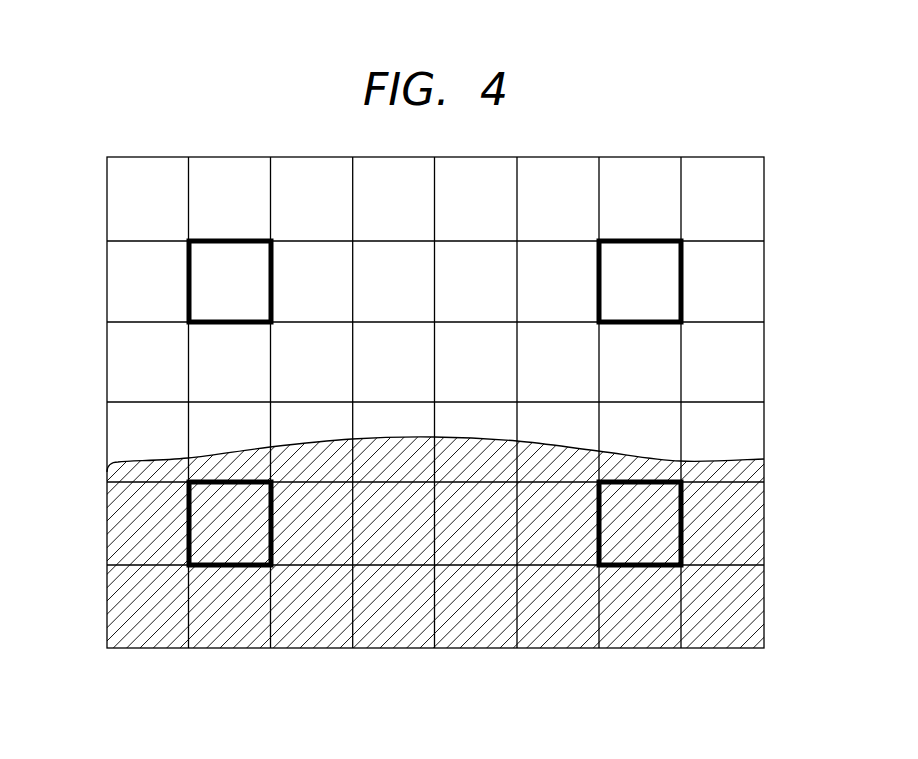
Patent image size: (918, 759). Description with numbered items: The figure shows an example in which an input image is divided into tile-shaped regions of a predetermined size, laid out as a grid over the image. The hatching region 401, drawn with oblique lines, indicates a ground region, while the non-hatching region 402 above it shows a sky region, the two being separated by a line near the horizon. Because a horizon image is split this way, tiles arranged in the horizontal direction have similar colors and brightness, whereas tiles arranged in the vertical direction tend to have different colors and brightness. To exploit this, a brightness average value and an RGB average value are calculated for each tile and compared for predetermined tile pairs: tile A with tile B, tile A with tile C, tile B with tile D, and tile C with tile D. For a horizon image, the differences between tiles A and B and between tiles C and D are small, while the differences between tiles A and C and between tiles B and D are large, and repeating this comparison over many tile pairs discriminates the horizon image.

The hatching region 401 is at (122, 565).
The non-hatching region 402 is at (127, 278).
The tile A is at (230, 281).
The tile B is at (640, 281).
The tile C is at (230, 523).
The tile D is at (640, 523).